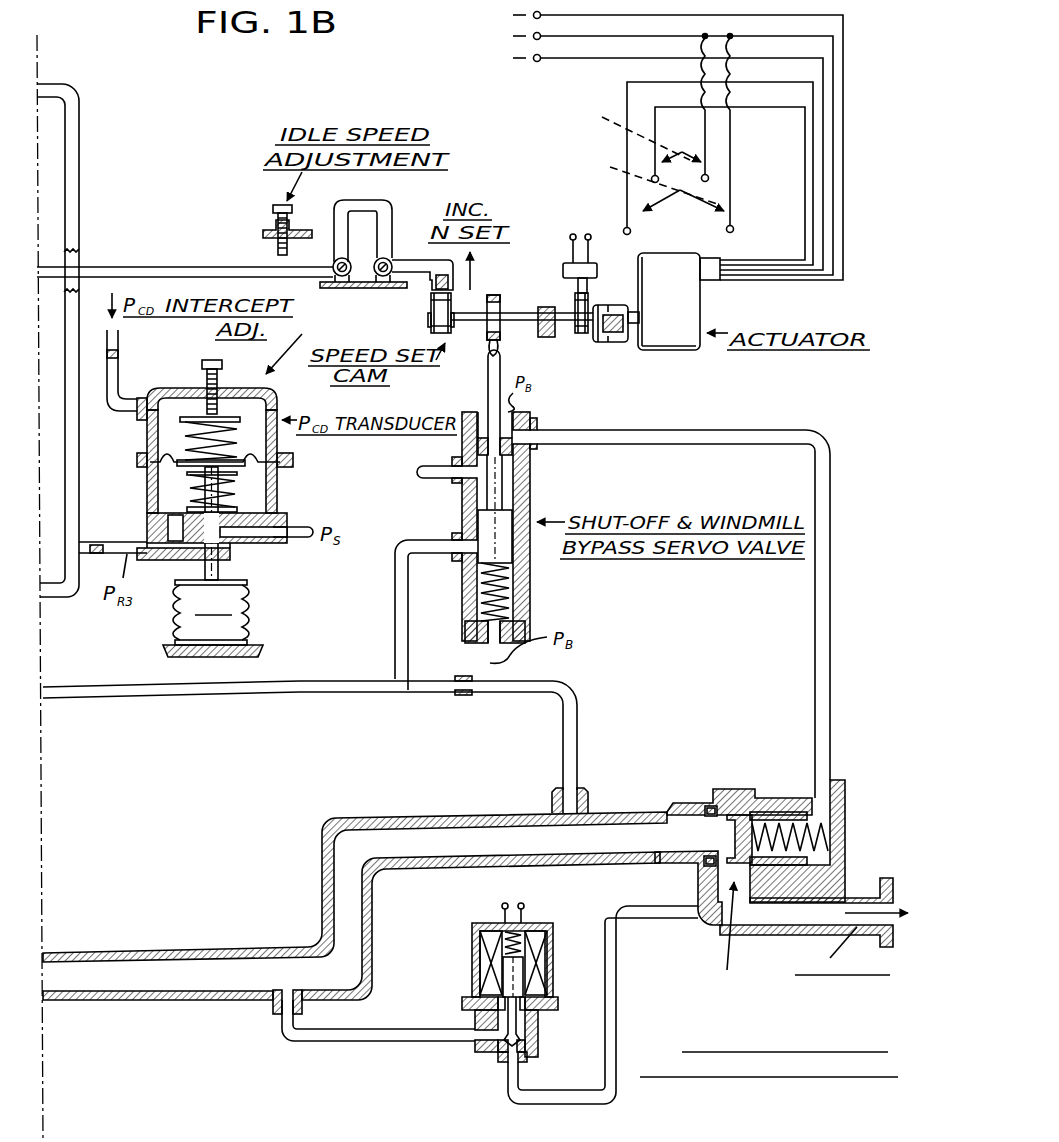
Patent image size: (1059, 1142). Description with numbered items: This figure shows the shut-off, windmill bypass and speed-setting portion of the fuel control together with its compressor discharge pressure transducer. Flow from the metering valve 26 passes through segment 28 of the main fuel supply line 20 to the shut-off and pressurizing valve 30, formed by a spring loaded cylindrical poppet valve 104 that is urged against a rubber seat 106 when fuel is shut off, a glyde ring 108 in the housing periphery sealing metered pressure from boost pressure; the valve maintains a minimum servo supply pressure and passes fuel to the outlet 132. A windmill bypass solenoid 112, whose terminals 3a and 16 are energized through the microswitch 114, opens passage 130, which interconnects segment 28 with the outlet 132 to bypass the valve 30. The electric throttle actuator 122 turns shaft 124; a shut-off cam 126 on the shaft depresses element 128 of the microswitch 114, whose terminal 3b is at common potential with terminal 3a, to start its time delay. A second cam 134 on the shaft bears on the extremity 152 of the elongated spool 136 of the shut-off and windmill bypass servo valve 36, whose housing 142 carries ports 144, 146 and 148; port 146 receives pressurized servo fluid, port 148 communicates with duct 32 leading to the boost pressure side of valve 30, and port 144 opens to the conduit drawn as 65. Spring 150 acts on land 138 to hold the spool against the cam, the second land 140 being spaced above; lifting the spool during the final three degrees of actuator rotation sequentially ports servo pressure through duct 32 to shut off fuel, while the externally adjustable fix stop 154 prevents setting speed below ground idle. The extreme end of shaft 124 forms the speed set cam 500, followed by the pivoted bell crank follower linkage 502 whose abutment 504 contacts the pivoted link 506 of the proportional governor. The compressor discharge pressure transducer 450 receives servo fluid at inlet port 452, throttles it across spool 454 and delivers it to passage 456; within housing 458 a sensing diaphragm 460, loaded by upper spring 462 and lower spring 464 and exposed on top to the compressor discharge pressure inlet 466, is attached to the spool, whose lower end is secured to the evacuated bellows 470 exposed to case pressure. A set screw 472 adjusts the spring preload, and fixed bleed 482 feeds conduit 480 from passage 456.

The conduit 480 is at (73, 105).
The pivoted link 506 is at (128, 252).
The externally adjustable fix stop 154 is at (273, 208).
The abutment 504 is at (386, 186).
The follower linkage 502 is at (407, 262).
The speed set cam 500 is at (430, 300).
The cam 134 is at (498, 293).
The extremity of spool 152 is at (501, 351).
The elongated spool 136 is at (488, 383).
The microswitch 114 is at (590, 268).
The metering valve 26 is at (573, 232).
The terminal 3b is at (590, 232).
The element 128 is at (578, 285).
The shut-off cam 126 is at (582, 335).
The shaft 124 is at (615, 336).
The throttle actuator 122 is at (676, 317).
The compressor discharge pressure transducer 450 is at (302, 344).
The compressor discharge pressure inlet 466 is at (146, 395).
The housing 458 is at (240, 422).
The intercept adjustment set screw 472 is at (226, 364).
The upper spring 462 is at (244, 432).
The sensing diaphragm 460 is at (147, 441).
The lower spring 464 is at (188, 484).
The valve spool 454 is at (240, 568).
The passage 456 is at (188, 549).
The fixed bleed 482 is at (100, 544).
The inlet port 452 is at (277, 541).
The evacuated bellows 470 is at (247, 618).
The shut-off and windmill bypass servo valve 36 is at (523, 518).
The port 146 is at (463, 459).
The port 144 is at (462, 533).
The port 148 is at (526, 440).
The valve housing 142 is at (530, 472).
The land 140 is at (497, 446).
The land 138 is at (530, 510).
The spring 150 is at (530, 580).
The duct 32 is at (700, 437).
The conduit 65 is at (598, 688).
The main fuel supply line 20 is at (355, 952).
The segment 28 is at (199, 948).
The shut-off and pressurizing valve 30 is at (774, 891).
The rubber seat 106 is at (717, 789).
The cylindrical poppet valve 104 is at (740, 812).
The glyde ring 108 is at (767, 810).
The outlet 132 is at (867, 907).
The windmill bypass solenoid 112 is at (493, 971).
The lead 16 is at (504, 902).
The terminal 3a is at (522, 902).
The passage 130 is at (369, 1040).